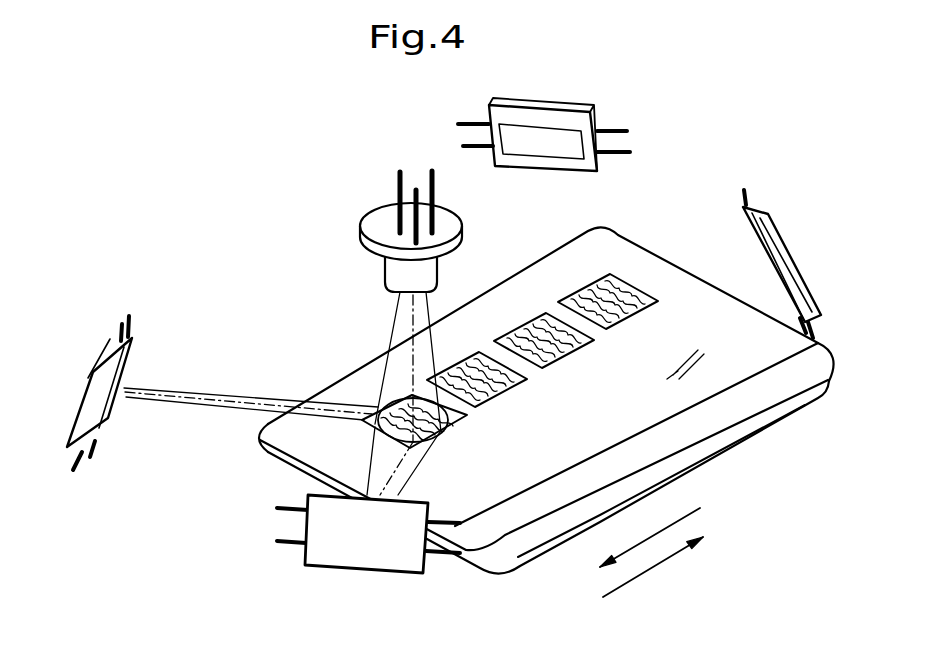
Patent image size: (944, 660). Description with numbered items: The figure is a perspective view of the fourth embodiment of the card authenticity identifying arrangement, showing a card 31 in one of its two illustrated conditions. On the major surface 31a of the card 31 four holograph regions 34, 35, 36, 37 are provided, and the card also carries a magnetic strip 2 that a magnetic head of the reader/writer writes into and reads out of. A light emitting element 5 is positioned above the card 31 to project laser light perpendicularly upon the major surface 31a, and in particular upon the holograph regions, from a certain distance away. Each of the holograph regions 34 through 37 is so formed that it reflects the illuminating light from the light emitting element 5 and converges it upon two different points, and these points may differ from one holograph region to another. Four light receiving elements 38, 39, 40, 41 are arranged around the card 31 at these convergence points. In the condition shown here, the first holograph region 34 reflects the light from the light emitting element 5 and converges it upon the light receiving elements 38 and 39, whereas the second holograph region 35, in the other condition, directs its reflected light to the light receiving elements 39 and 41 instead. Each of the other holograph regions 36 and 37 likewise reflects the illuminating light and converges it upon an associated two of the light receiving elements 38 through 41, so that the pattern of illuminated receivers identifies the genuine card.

The magnetic strip 2 is at (768, 368).
The light emitting element 5 is at (375, 224).
The card 31 is at (545, 548).
The major surface 31a is at (290, 428).
The first holograph region 34 is at (459, 412).
The second holograph region 35 is at (473, 356).
The holograph region 36 is at (539, 326).
The holograph region 37 is at (640, 296).
The light receiving element 38 is at (130, 352).
The light receiving element 39 is at (377, 563).
The light receiving element 40 is at (782, 231).
The light receiving element 41 is at (573, 113).